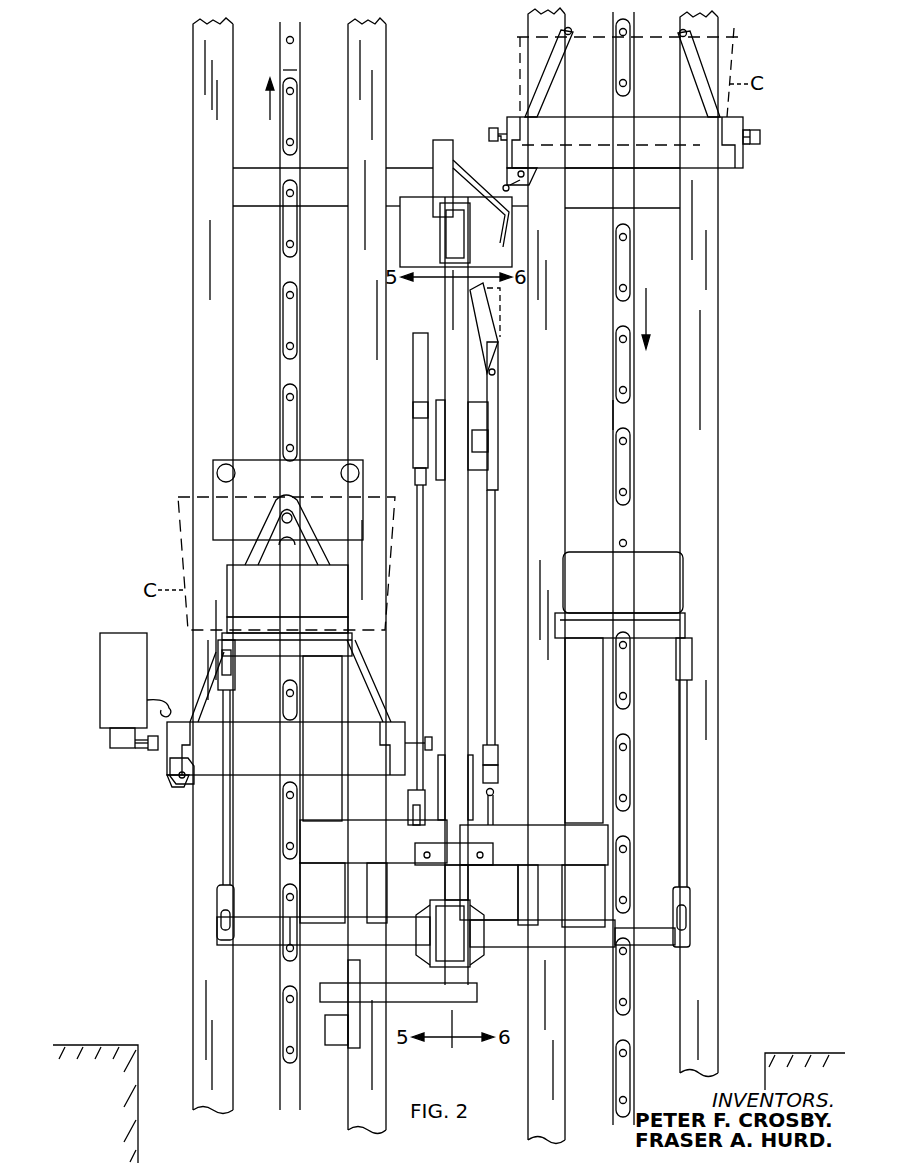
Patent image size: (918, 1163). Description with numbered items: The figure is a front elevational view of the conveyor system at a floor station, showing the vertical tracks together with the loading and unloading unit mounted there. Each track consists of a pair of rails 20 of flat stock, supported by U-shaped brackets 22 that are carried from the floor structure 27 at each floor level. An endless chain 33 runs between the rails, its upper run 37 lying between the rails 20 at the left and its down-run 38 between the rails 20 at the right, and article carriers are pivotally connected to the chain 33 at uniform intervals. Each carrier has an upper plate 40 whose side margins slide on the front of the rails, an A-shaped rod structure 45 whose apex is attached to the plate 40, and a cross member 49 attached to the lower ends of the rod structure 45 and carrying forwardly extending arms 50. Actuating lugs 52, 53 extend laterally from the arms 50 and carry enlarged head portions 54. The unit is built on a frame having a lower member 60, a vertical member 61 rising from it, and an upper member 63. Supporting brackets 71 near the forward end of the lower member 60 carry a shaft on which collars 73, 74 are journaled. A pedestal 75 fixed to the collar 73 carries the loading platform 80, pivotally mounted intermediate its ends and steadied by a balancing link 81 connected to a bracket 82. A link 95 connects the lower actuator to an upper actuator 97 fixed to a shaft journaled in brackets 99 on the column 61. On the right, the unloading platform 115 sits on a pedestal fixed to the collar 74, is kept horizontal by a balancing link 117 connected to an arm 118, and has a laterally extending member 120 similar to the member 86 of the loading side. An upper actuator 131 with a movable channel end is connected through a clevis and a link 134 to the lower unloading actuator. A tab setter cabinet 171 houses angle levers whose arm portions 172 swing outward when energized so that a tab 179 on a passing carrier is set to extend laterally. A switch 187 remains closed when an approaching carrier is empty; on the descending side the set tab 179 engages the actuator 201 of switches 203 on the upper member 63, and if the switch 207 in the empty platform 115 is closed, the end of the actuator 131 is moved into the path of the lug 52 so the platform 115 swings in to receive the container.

The rails 20 is at (226, 144).
The U-shaped brackets 22 is at (336, 199).
The floor structure 27 is at (100, 1048).
The chain 33 is at (300, 104).
The upper run of the chain 37 is at (296, 70).
The down-run of the chain 38 is at (624, 422).
The upper plate 40 is at (318, 494).
The A-shaped rod structure 45 is at (552, 78).
The cross member 49 is at (656, 141).
The forwardly extending arms 50 is at (530, 130).
The actuating lug 52 is at (500, 125).
The actuating lug 53 is at (748, 132).
The enlarged head portions 54 is at (489, 128).
The lower member 60 is at (436, 966).
The vertical member 61 is at (462, 782).
The upper member 63 is at (446, 237).
The supporting brackets 71 is at (423, 925).
The collar 73 is at (340, 940).
The collar 74 is at (575, 946).
The pedestal 75 is at (334, 784).
The loading platform 80 is at (303, 617).
The balancing link 81 is at (230, 815).
The bracket 82 is at (253, 930).
The laterally extending member 86 is at (381, 856).
The link 95 is at (419, 686).
The actuator 97 is at (420, 378).
The brackets 99 is at (440, 448).
The unloading platform 115 is at (622, 614).
The balancing link 117 is at (600, 782).
The arm 118 is at (665, 946).
The laterally extending member 120 is at (568, 856).
The actuator 131 is at (499, 388).
The link 134 is at (492, 688).
The tab setter cabinet 171 is at (138, 700).
The arm portion 172 is at (169, 693).
The tabs 179 is at (172, 780).
The switch 187 is at (340, 1045).
The actuator 201 is at (510, 222).
The switches 203 is at (448, 142).
The switch 207 is at (622, 612).